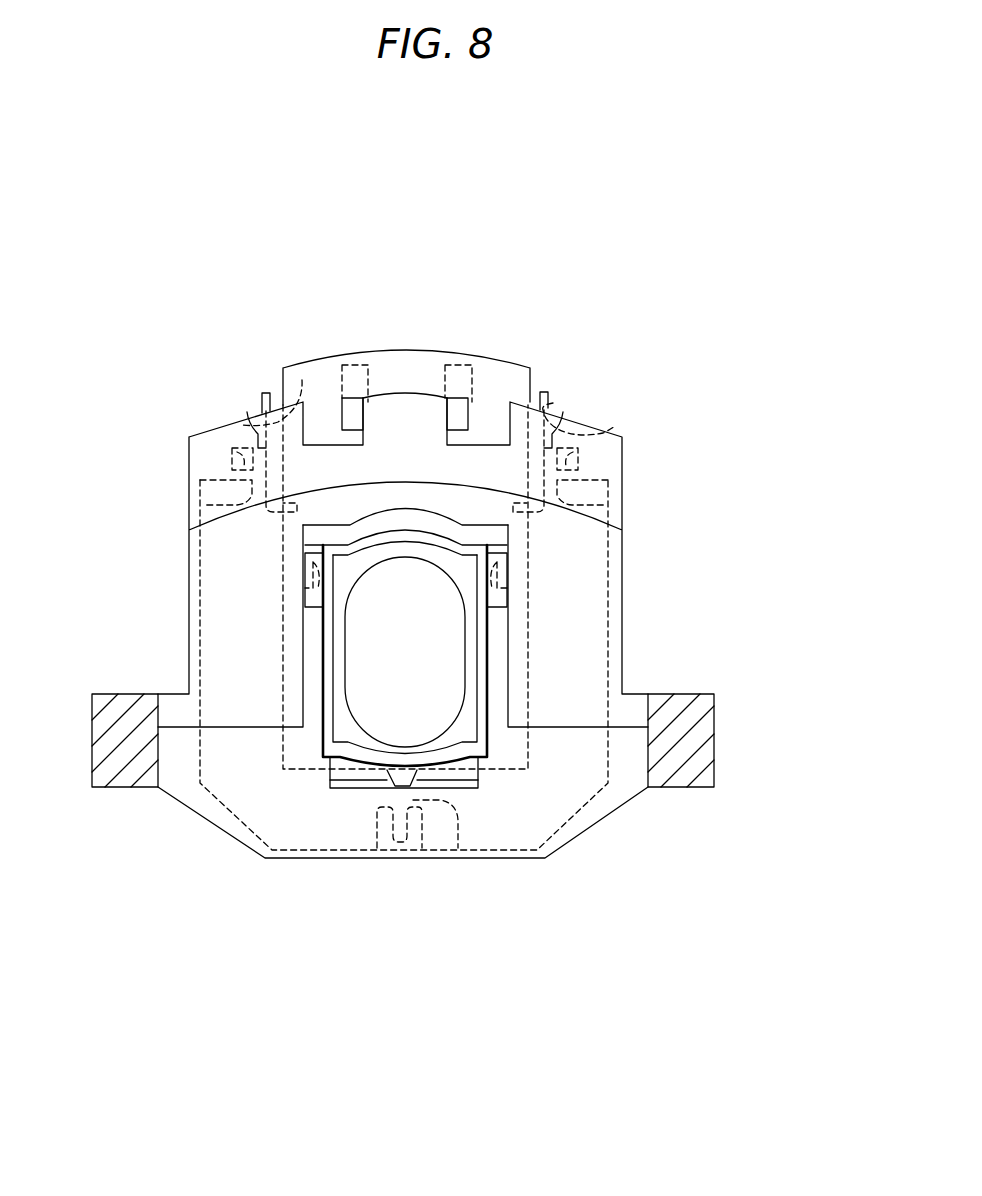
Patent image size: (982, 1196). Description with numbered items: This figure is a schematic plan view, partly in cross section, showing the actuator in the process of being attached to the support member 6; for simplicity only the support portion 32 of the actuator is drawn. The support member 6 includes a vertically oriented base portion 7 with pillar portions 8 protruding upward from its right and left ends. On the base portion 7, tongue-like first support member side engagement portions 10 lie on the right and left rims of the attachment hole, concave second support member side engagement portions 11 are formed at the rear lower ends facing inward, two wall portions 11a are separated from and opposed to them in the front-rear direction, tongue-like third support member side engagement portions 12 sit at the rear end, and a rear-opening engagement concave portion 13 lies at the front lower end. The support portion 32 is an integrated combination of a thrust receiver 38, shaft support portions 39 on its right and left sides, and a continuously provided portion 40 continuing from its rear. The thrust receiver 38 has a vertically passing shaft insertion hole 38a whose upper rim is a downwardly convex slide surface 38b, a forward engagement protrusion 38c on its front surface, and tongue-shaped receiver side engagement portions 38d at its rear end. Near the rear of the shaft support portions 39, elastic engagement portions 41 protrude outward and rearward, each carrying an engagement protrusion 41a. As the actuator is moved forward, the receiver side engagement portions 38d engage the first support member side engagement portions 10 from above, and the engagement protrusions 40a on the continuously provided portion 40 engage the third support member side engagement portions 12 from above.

The support member 6 is at (593, 838).
The base portion 7 is at (556, 855).
The pillar portions 8 is at (110, 787).
The first support member side engagement portions 10 is at (305, 563).
The second support member side engagement portions 11 is at (247, 460).
The wall portions 11a is at (302, 380).
The third support member side engagement portions 12 is at (357, 415).
The engagement concave portion 13 is at (457, 838).
The support portion 32 is at (510, 362).
The thrust receiver 38 is at (333, 788).
The shaft insertion hole 38a is at (362, 775).
The slide surface 38b is at (342, 694).
The engagement protrusion 38c is at (478, 788).
The receiver side engagement portions 38d is at (317, 608).
The shaft support portions 39 is at (282, 760).
The continuously provided portion 40 is at (417, 373).
The engagement protrusions 40a is at (333, 399).
The elastic engagement portions 41 is at (266, 393).
The engagement protrusion 41a is at (217, 424).